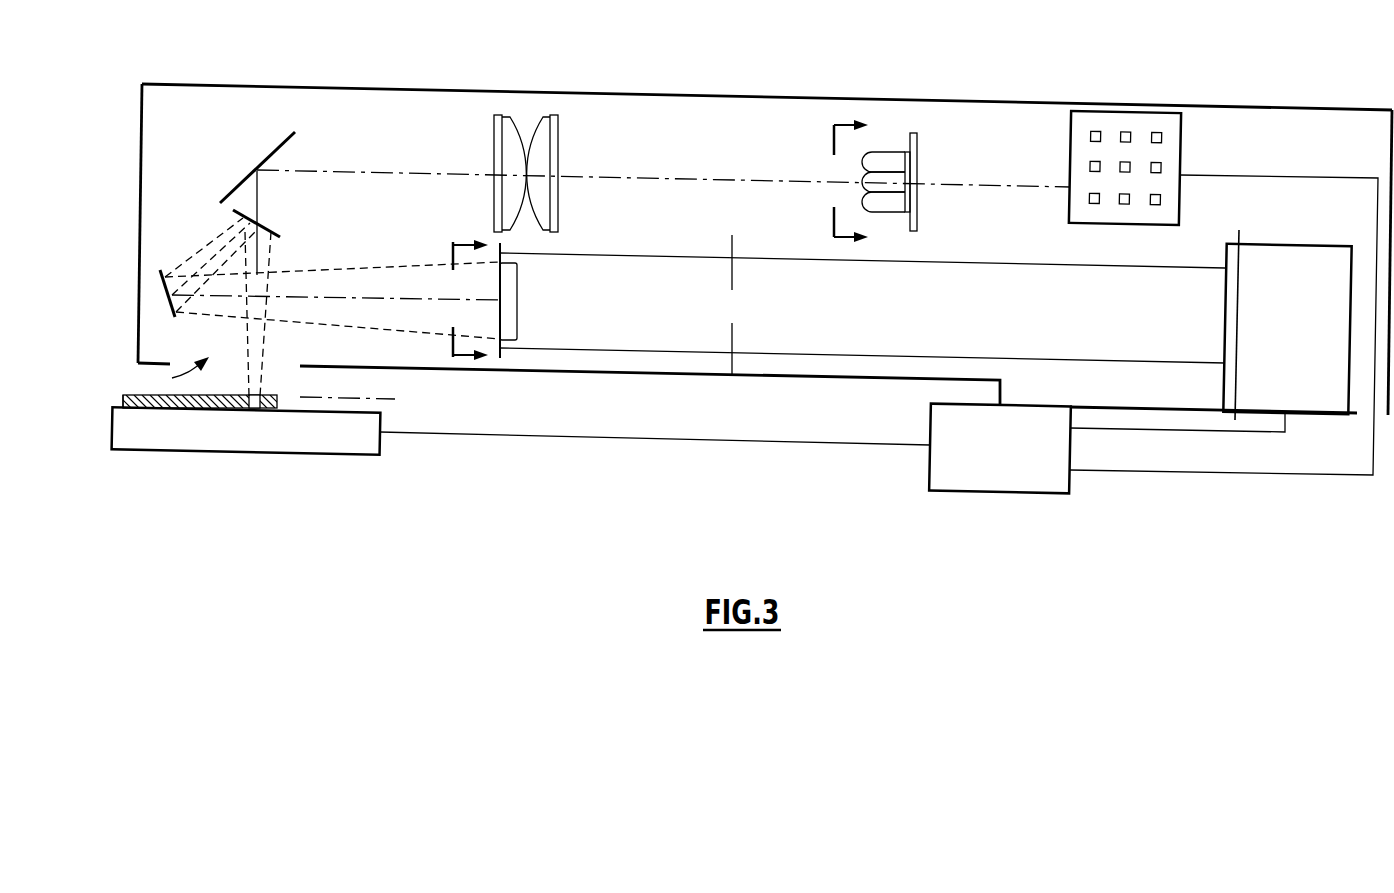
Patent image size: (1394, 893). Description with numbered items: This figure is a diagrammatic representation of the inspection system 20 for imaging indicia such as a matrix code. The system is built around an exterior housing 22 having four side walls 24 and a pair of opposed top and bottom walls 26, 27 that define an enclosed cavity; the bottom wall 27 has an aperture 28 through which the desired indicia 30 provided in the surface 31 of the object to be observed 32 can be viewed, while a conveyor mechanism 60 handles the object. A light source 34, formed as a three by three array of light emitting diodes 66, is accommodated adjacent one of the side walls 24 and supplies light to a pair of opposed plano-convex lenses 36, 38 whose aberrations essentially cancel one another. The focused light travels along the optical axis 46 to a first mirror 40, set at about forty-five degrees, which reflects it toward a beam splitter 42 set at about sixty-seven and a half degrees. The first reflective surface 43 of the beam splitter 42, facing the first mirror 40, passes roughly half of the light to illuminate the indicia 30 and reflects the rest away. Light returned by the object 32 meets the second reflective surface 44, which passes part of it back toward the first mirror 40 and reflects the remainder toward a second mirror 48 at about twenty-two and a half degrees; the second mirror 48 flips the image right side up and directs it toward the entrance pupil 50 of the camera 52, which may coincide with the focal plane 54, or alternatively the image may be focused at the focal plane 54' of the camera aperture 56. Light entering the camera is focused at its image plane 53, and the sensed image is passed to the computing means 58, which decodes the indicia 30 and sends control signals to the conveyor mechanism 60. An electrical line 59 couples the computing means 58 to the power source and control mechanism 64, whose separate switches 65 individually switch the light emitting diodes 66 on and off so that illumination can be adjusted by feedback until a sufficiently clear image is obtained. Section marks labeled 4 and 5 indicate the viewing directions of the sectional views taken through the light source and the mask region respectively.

The inspection system 20 is at (1060, 30).
The exterior housing 22 is at (179, 84).
The side walls 24 is at (140, 125).
The top wall 26 is at (652, 93).
The bottom wall 27 is at (597, 376).
The aperture 28 is at (175, 376).
The indicia 30 is at (263, 396).
The surface 31 is at (135, 395).
The object to be observed 32 is at (122, 401).
The light source 34 is at (918, 158).
The first lens 36 is at (559, 134).
The second lens 38 is at (494, 130).
The first mirror 40 is at (256, 170).
The beam splitter 42 is at (236, 213).
The first reflective surface 43 is at (275, 228).
The second reflective surface 44 is at (240, 221).
The optical axis 46 is at (421, 172).
The second mirror 48 is at (165, 292).
The entrance pupil 50 is at (497, 326).
The camera 52 is at (1289, 246).
The image plane 53 is at (1230, 414).
The focal plane 54 is at (857, 323).
The aperture focal plane 54' is at (696, 256).
The camera aperture 56 is at (730, 336).
The computing means 58 is at (1020, 492).
The electrical line 59 is at (1326, 476).
The conveyor mechanism 60 is at (328, 452).
The power source and control mechanism 64 is at (1148, 112).
The switches 65 is at (1156, 165).
The light emitting diodes 66 is at (892, 184).
The section line 4- 4 is at (840, 182).
The section line 5- 5 is at (460, 301).